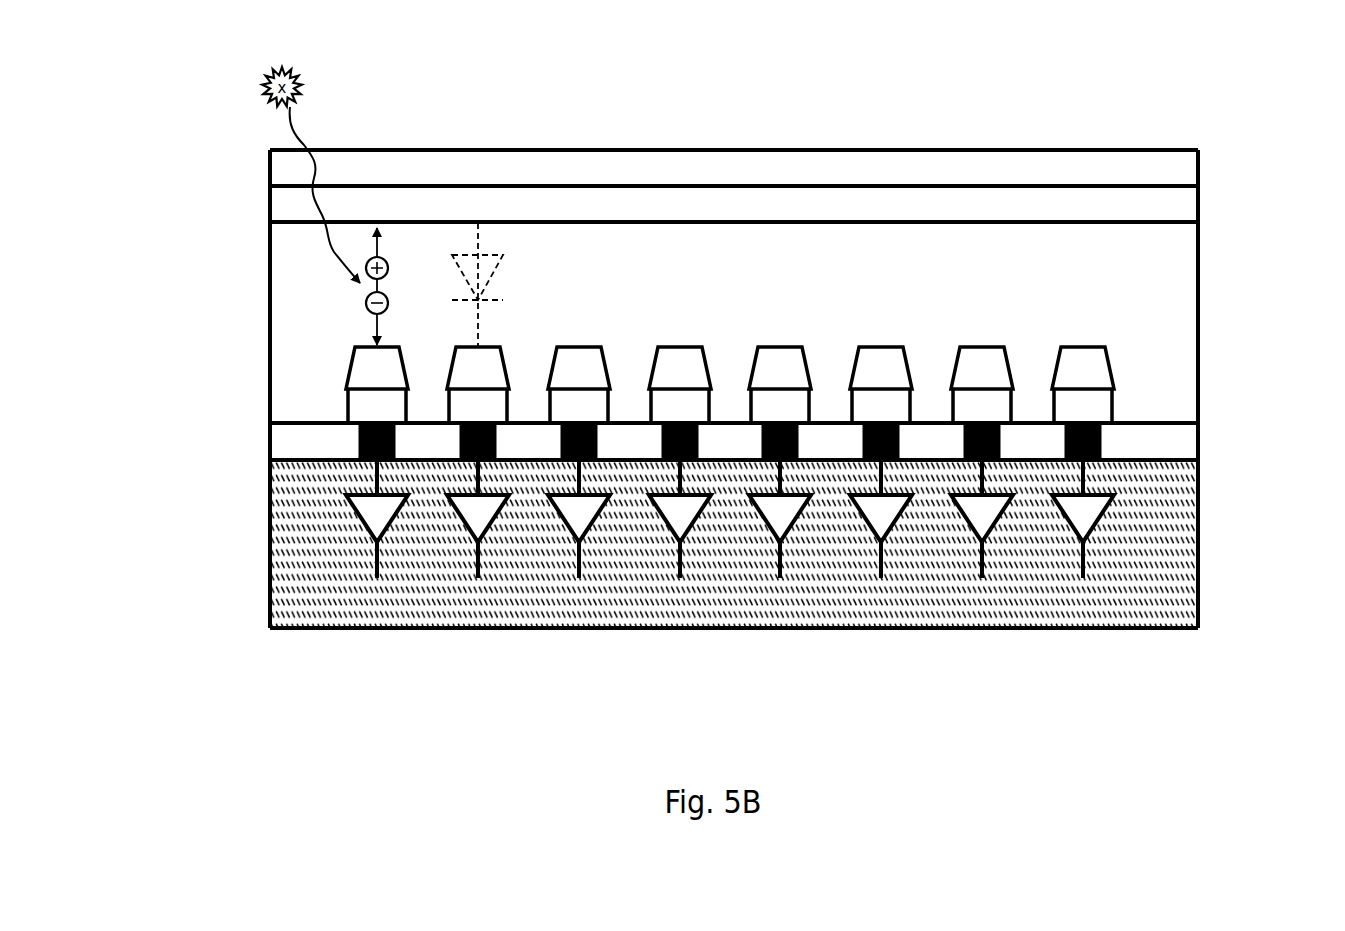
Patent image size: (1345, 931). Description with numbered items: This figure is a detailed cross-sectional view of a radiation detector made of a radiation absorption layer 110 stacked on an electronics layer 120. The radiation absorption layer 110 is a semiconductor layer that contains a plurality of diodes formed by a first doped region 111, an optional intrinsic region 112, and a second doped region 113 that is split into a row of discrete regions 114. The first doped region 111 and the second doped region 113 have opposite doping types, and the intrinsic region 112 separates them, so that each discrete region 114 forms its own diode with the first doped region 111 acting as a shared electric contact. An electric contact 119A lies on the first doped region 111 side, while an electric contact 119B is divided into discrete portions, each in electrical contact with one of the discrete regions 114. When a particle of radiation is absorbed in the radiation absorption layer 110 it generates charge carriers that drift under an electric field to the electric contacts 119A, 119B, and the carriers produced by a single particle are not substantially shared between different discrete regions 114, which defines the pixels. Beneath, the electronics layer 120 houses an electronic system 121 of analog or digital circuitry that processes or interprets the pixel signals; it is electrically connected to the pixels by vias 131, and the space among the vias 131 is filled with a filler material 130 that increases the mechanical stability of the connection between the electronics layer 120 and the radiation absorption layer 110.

The radiation absorption layer 110 is at (258, 187).
The first doped region 111 is at (1204, 206).
The intrinsic region 112 is at (1202, 275).
The second doped region 113 is at (1211, 348).
The discrete region 114 is at (730, 368).
The electric contact 119A is at (1124, 170).
The electric contact 119B is at (730, 406).
The electronics layer 120 is at (258, 462).
The electronic system 121 is at (1110, 521).
The filler material 130 is at (1206, 460).
The via 131 is at (354, 443).